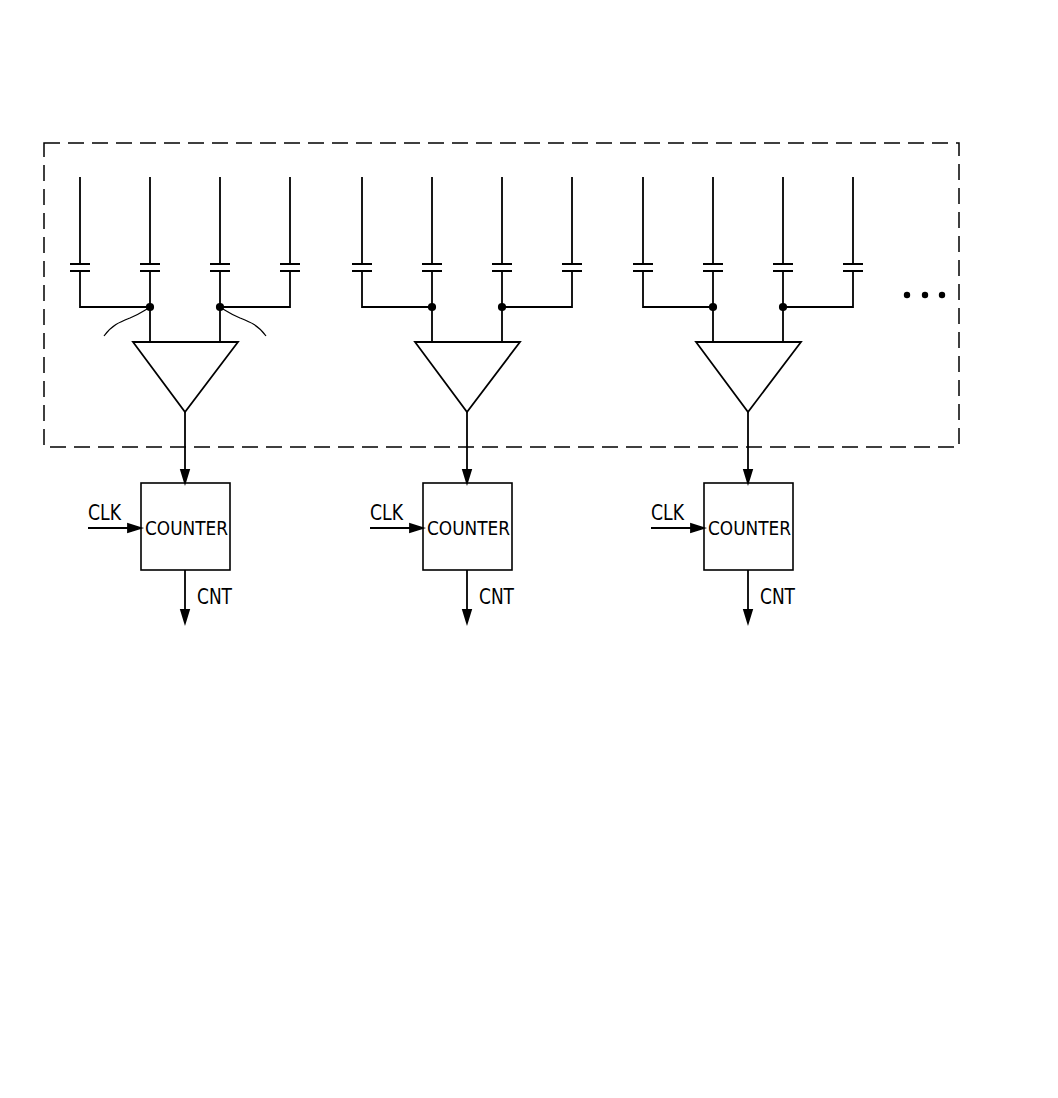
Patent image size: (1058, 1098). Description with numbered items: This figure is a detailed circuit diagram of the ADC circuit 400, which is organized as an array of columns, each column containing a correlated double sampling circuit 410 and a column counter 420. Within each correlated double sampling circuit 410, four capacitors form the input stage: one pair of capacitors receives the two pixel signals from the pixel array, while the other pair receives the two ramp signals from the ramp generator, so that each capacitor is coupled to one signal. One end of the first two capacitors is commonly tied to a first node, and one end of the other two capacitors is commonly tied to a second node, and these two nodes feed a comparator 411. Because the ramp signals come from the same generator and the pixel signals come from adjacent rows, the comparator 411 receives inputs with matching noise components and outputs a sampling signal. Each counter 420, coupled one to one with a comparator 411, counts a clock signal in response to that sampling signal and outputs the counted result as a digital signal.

The ADC circuit 400 is at (775, 68).
The correlated double sampling (CDS) circuit 410 is at (501, 142).
The comparator 411 is at (158, 380).
The column counter 420 is at (140, 553).